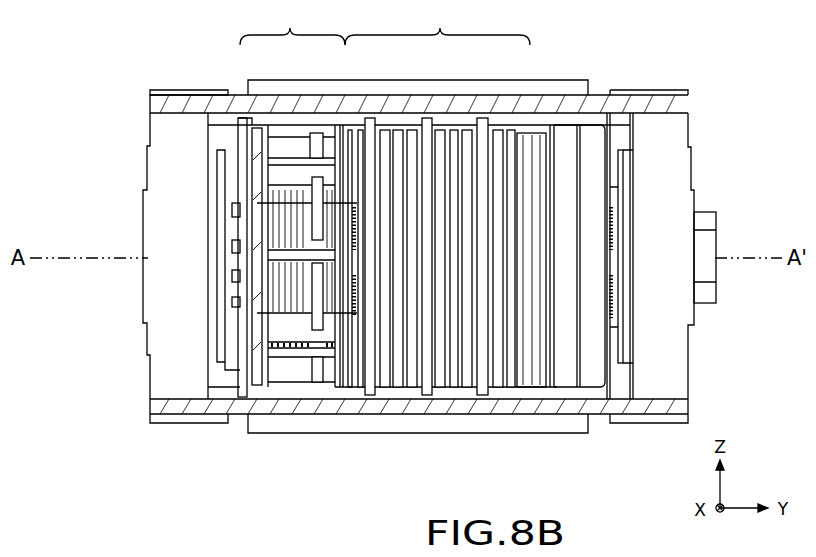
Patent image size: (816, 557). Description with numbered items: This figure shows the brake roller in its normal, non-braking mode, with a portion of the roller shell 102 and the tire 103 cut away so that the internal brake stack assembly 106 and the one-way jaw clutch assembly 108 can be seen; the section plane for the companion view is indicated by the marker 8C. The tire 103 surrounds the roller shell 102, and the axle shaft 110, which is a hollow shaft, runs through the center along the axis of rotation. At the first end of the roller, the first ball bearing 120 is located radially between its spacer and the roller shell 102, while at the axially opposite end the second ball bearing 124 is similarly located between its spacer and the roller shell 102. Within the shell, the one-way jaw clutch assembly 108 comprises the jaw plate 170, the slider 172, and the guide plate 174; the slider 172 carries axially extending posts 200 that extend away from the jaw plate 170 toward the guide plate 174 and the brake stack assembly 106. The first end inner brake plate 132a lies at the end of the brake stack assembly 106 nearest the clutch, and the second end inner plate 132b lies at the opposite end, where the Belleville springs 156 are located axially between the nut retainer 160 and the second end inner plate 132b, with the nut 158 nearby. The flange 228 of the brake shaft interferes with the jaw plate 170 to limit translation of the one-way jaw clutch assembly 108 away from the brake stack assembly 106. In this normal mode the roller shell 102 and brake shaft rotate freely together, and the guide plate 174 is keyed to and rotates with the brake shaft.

The roller shell 102 is at (652, 407).
The tire 103 is at (528, 88).
The brake stack assembly 106 is at (446, 197).
The one-way jaw clutch assembly 108 is at (292, 22).
The axle shaft 110 is at (700, 290).
The first ball bearing 120 is at (158, 133).
The second ball bearing 124 is at (667, 360).
The first end inner brake plate 132a is at (345, 380).
The second end inner plate 132b is at (503, 378).
The Belleville springs 156 is at (527, 353).
The nut 158 is at (585, 153).
The nut retainer 160 is at (565, 137).
The jaw plate 170 is at (245, 132).
The slider 172 is at (260, 385).
The guide plate 174 is at (316, 367).
The posts 200 is at (300, 173).
The flange 228 is at (235, 337).
The section view indicator 8C is at (213, 228).